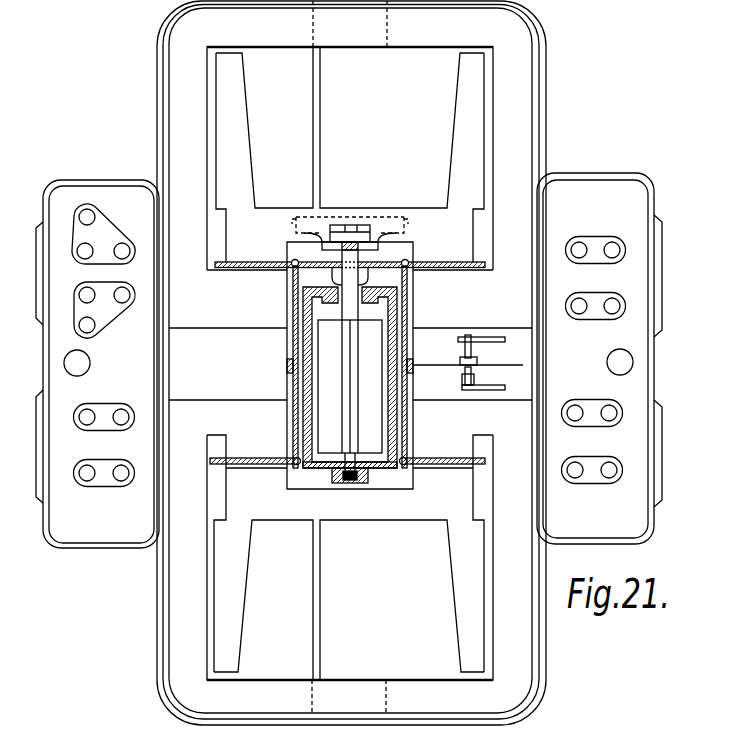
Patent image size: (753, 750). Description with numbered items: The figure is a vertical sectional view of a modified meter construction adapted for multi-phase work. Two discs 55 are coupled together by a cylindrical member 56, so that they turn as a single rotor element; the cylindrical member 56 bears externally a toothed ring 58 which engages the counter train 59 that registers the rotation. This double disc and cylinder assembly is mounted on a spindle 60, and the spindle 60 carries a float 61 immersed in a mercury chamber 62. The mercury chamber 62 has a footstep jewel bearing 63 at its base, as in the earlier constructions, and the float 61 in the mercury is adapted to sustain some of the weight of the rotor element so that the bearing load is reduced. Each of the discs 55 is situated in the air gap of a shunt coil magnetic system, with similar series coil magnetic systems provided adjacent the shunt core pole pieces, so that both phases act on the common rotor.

The discs 55 is at (232, 268).
The cylindrical member 56 is at (297, 410).
The toothed ring 58 is at (412, 363).
The counter train 59 is at (490, 367).
The spindle 60 is at (352, 427).
The float 61 is at (330, 347).
The mercury chamber 62 is at (387, 468).
The footstep jewel bearing 63 is at (352, 483).